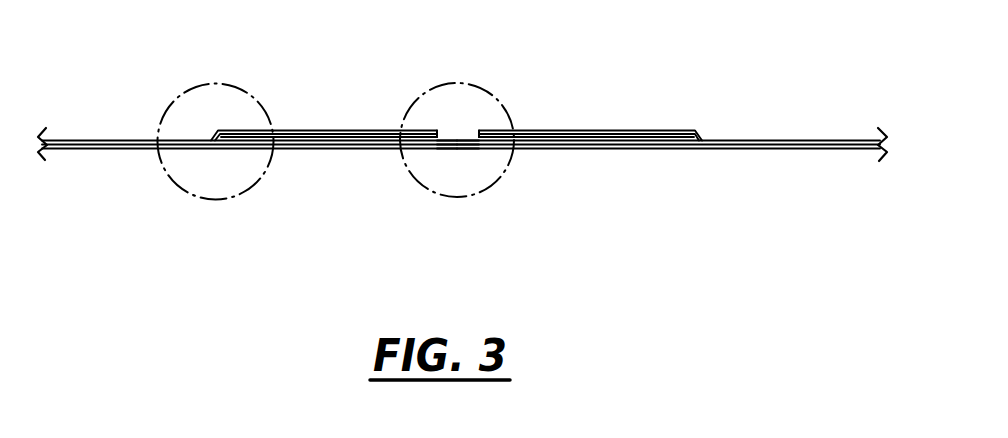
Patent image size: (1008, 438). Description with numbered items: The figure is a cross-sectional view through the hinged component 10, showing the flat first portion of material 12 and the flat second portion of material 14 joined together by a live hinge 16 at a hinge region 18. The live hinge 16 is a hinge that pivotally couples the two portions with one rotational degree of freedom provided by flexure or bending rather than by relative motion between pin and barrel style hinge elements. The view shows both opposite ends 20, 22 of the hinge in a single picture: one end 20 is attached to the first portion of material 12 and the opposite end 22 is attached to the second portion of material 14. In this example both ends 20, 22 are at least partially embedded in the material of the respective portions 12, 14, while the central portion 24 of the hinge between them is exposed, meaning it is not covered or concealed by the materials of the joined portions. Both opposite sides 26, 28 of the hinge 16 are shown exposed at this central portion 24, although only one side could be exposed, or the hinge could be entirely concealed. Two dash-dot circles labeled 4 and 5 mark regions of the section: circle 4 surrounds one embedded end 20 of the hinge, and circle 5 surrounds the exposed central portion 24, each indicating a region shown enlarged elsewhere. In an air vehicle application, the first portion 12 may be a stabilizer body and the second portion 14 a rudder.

The detail view circle (FIG. 4) 4 is at (171, 185).
The detail view circle (FIG. 5) 5 is at (504, 186).
The hinged component 10 is at (135, 41).
The first portion of material 12 is at (102, 140).
The second portion of material 14 is at (770, 141).
The live hinge 16 is at (482, 132).
The hinge region 18 is at (409, 111).
The end of the hinge 20 is at (229, 135).
The opposite end of the hinge 22 is at (673, 135).
The central portion of the hinge 24 is at (455, 140).
The side of the hinge 26 is at (455, 140).
The opposite side of the hinge 28 is at (440, 148).